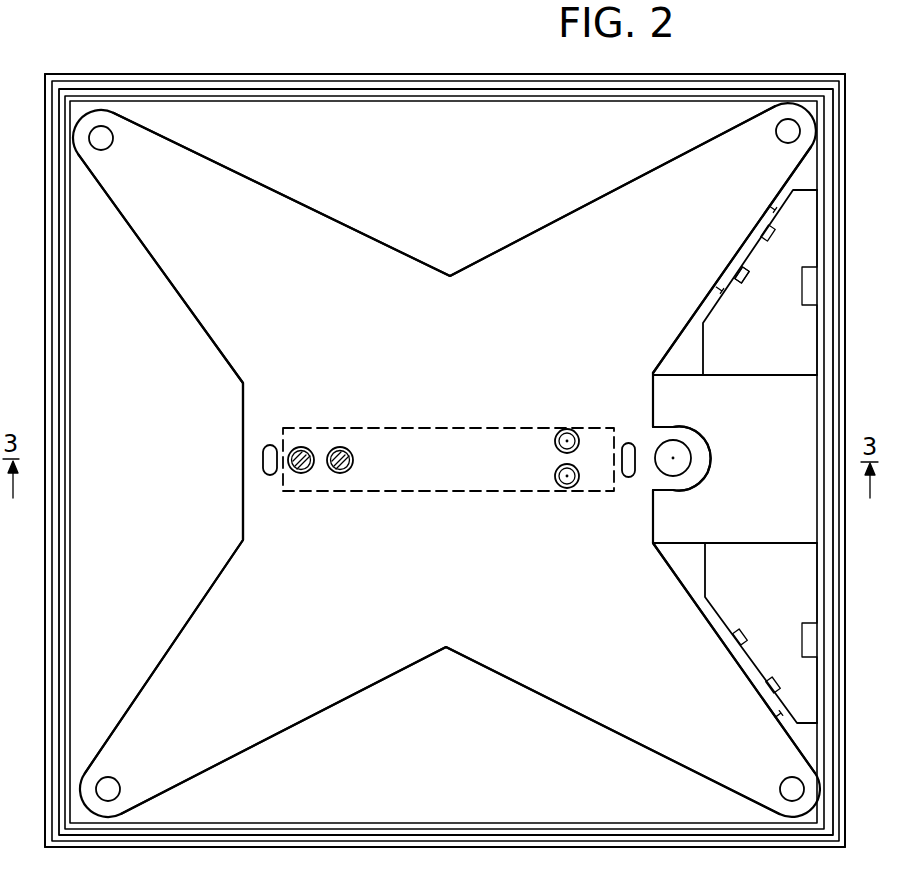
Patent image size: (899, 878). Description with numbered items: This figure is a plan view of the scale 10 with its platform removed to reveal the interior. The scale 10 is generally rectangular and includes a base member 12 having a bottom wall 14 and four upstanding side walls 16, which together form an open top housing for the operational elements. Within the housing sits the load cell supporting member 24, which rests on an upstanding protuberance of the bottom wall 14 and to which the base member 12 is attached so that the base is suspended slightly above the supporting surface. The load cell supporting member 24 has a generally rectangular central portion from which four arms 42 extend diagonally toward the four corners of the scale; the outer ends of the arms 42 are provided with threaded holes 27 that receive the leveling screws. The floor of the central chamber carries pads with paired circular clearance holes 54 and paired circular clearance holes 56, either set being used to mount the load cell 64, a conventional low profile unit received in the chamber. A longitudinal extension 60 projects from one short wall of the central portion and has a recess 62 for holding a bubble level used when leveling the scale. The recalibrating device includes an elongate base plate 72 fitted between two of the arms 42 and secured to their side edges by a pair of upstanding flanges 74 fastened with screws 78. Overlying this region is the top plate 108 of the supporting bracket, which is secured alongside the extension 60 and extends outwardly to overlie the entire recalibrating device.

The scale 10 is at (721, 62).
The base member 12 is at (220, 75).
The bottom wall 14 is at (457, 756).
The side walls 16 is at (833, 590).
The load cell supporting member 24 is at (188, 333).
The threaded holes 27 is at (110, 147).
The arms 42 is at (268, 187).
The circular clearance holes 54 is at (556, 474).
The circular clearance holes 56 is at (340, 447).
The longitudinal extension 60 is at (705, 473).
The recess 62 is at (677, 450).
The load cell 64 is at (420, 427).
The base plate 72 is at (717, 345).
The upstanding flanges 74 is at (745, 250).
The screws 78 is at (742, 279).
The top plate 108 is at (662, 393).